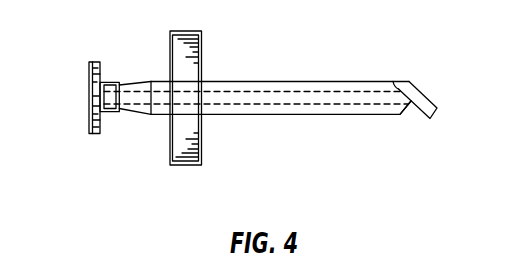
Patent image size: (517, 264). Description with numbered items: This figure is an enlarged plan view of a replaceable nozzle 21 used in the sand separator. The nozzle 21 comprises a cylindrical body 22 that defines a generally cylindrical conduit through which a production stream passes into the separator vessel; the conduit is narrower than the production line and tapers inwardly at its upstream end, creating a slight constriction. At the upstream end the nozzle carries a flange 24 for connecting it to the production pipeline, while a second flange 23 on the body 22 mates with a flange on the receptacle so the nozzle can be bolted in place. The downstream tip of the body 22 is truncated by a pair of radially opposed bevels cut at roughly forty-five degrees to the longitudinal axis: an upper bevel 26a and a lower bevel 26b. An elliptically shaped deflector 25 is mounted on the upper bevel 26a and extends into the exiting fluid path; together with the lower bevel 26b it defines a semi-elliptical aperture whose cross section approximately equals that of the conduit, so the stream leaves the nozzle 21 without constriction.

The replaceable nozzle 21 is at (220, 52).
The cylindrical body 22 is at (227, 116).
The flange 23 is at (170, 146).
The flange 24 is at (89, 120).
The deflector 25 is at (428, 102).
The upper bevel 26a is at (397, 89).
The lower bevel 26b is at (412, 103).